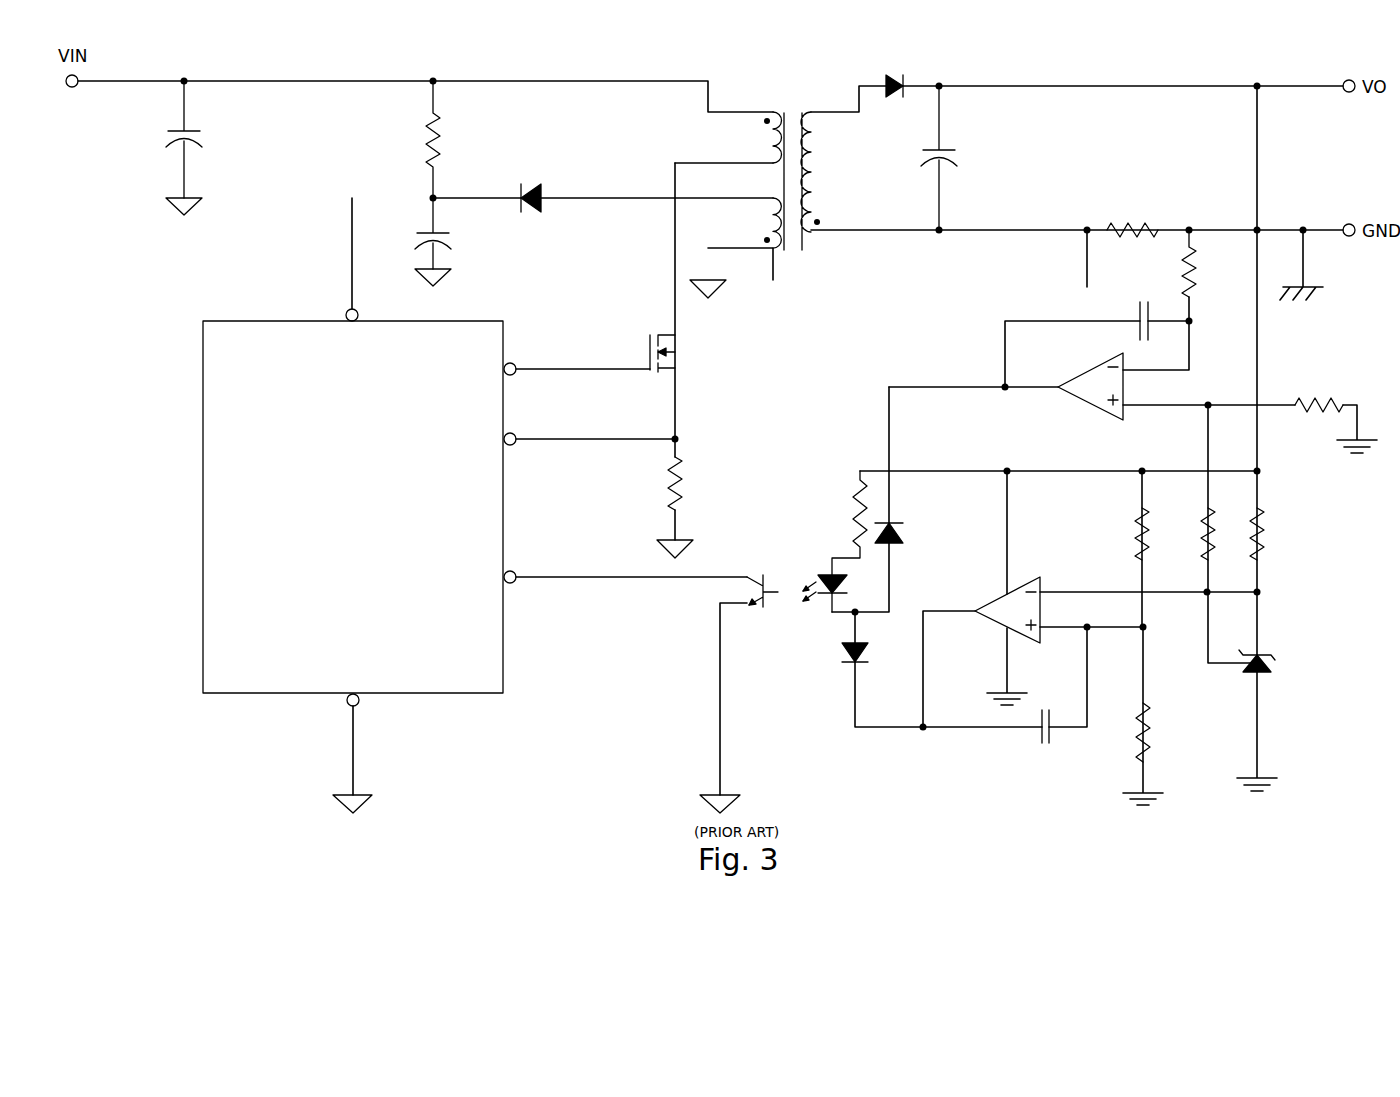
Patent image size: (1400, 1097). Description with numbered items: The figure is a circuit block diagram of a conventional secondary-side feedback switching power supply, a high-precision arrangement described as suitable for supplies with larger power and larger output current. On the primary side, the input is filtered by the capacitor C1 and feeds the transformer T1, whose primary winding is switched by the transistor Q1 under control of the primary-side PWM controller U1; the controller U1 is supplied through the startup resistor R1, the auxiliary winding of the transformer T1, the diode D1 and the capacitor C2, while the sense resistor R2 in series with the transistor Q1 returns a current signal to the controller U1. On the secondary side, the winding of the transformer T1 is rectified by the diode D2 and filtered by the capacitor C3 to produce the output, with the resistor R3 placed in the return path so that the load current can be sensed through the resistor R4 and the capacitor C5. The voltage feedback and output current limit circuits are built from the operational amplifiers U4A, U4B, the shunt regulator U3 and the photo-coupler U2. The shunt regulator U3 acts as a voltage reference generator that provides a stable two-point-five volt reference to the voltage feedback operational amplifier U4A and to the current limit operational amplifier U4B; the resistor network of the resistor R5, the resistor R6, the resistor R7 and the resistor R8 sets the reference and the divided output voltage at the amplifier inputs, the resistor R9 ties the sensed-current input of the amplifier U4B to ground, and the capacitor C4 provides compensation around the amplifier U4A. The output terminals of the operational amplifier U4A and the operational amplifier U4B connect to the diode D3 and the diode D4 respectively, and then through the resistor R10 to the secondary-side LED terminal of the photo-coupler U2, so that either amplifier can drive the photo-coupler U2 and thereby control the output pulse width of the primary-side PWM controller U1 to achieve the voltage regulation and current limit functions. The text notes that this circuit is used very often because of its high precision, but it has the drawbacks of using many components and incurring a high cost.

The input capacitor C1 is at (167, 139).
The startup resistor R1 is at (417, 139).
The VCC capacitor C2 is at (417, 233).
The auxiliary rectifier diode D1 is at (533, 186).
The transformer T1 is at (786, 161).
The output rectifier diode D2 is at (896, 73).
The output capacitor C3 is at (953, 158).
The current sense resistor R3 is at (1132, 220).
The resistor R4 is at (1202, 263).
The compensation capacitor C5 is at (1144, 310).
The current limit operational amplifier U4B is at (1084, 377).
The resistor R9 is at (1319, 392).
The resistor R10 is at (841, 523).
The diode D4 is at (903, 533).
The photo-coupler U2 is at (797, 582).
The diode D3 is at (869, 656).
The voltage feedback operational amplifier U4A is at (997, 616).
The capacitor C4 is at (1042, 741).
The resistor R5 is at (1157, 534).
The resistor R8 is at (1221, 534).
The resistor R7 is at (1271, 534).
The resistor R6 is at (1159, 732).
The shunt regulator U3 is at (1271, 655).
The primary-side PWM controller U1 is at (359, 507).
The power MOSFET switch Q1 is at (678, 353).
The current sense resistor R2 is at (691, 483).